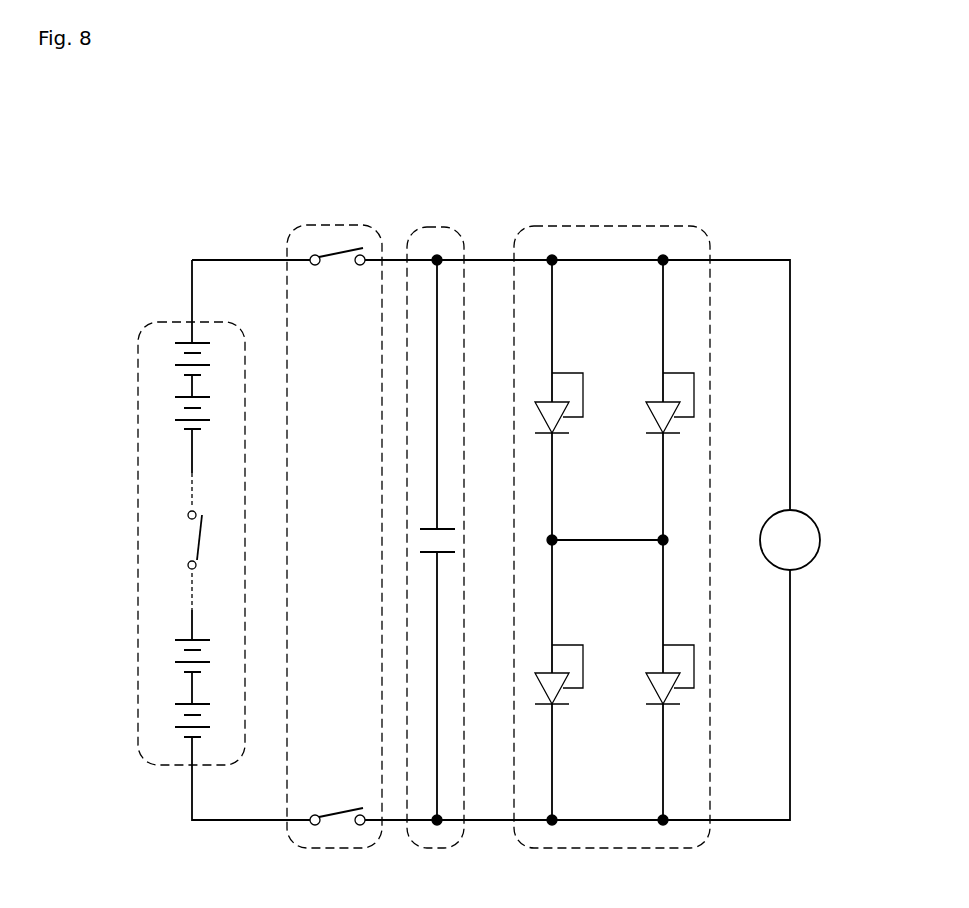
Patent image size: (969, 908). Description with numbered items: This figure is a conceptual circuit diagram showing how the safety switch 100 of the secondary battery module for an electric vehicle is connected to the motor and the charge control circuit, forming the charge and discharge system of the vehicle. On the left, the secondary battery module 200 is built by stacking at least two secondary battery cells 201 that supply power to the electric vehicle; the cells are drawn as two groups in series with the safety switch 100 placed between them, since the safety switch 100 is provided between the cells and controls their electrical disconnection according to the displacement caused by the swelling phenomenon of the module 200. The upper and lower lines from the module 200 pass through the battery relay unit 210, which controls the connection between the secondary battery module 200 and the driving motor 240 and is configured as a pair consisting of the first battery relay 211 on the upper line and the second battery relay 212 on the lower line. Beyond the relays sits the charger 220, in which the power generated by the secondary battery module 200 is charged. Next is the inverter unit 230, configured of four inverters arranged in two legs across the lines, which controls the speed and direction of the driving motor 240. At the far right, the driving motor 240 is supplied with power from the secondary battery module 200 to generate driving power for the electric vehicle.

The safety switch 100 is at (173, 532).
The secondary battery module 200 is at (147, 328).
The secondary battery cells 201 is at (177, 405).
The battery relay unit 210 is at (333, 496).
The first battery relay 211 is at (337, 266).
The second battery relay 212 is at (340, 803).
The charger 220 is at (437, 223).
The inverter unit 230 is at (612, 225).
The driving motor 240 is at (807, 518).